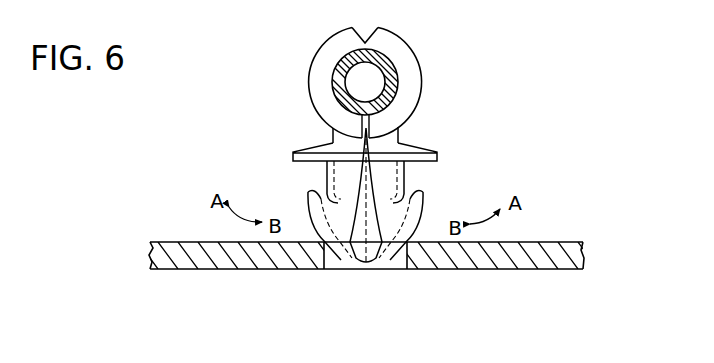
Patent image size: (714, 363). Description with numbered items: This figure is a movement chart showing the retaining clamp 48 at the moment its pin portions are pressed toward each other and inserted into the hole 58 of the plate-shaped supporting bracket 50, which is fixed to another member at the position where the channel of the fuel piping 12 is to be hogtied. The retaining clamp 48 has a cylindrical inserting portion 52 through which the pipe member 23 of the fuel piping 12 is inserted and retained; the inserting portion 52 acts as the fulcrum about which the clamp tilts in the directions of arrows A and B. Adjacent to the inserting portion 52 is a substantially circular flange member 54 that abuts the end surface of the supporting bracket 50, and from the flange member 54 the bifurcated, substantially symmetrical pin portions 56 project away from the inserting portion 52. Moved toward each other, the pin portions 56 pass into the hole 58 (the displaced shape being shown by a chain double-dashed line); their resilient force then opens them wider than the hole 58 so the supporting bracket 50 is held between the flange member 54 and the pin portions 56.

The retaining clamp 48 is at (414, 43).
The inserting portion 52 is at (311, 64).
The pipe member 23 is at (420, 62).
The fuel piping 12 is at (401, 104).
The flange member 54 is at (293, 157).
The pin portions 56 is at (308, 192).
The hole 58 is at (327, 261).
The supporting bracket 50 is at (477, 258).